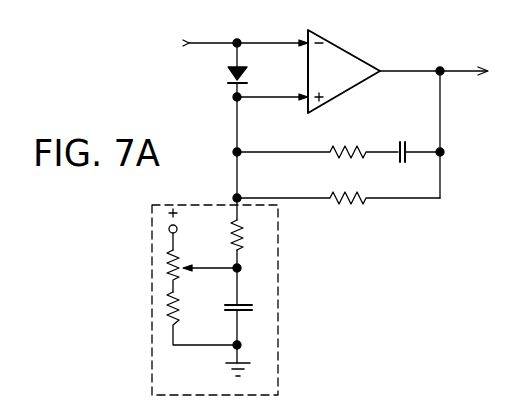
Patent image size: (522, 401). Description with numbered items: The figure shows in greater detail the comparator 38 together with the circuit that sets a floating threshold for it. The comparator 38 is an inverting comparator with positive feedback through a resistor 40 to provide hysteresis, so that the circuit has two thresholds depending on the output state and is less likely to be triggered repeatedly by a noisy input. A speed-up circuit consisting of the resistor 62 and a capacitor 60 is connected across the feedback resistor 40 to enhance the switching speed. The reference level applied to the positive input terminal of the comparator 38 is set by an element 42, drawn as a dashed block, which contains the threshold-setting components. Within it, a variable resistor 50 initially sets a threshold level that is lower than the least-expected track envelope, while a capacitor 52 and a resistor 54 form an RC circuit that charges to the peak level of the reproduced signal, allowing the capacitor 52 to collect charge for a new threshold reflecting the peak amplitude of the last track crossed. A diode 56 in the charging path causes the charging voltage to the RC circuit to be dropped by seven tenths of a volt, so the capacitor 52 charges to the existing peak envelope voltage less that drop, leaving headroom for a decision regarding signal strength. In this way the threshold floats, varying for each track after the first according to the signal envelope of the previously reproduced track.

The comparator 38 is at (334, 52).
The feedback resistor 40 is at (365, 205).
The element setting the reference level 42 is at (151, 281).
The variable resistor 50 is at (176, 258).
The capacitor 52 is at (225, 306).
The resistor 54 is at (240, 236).
The diode 56 is at (228, 77).
The capacitor 60 is at (403, 140).
The resistor 62 is at (348, 144).